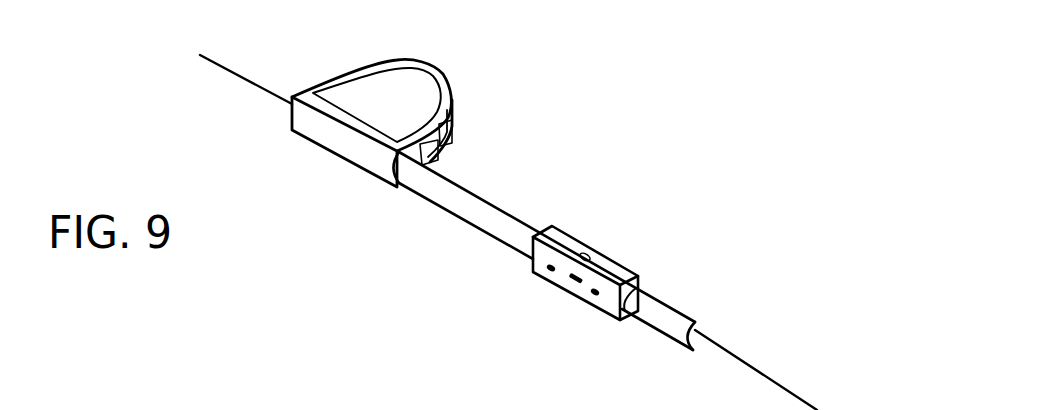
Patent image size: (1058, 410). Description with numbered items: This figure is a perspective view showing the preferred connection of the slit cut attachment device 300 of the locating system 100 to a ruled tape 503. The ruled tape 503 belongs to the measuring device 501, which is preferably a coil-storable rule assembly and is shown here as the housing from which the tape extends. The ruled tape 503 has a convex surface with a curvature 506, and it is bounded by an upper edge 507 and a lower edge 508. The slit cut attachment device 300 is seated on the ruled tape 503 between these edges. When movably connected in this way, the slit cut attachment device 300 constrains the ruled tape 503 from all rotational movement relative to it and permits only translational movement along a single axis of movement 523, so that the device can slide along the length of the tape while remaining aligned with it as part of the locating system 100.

The locating system 100 is at (298, 290).
The axis of movement 523 is at (243, 79).
The measuring device 501 is at (347, 165).
The upper edge 507 is at (459, 183).
The ruled tape 503 is at (467, 222).
The lower edge 508 is at (495, 237).
The curvature 506 is at (693, 325).
The slit cut attachment device 300 is at (620, 265).